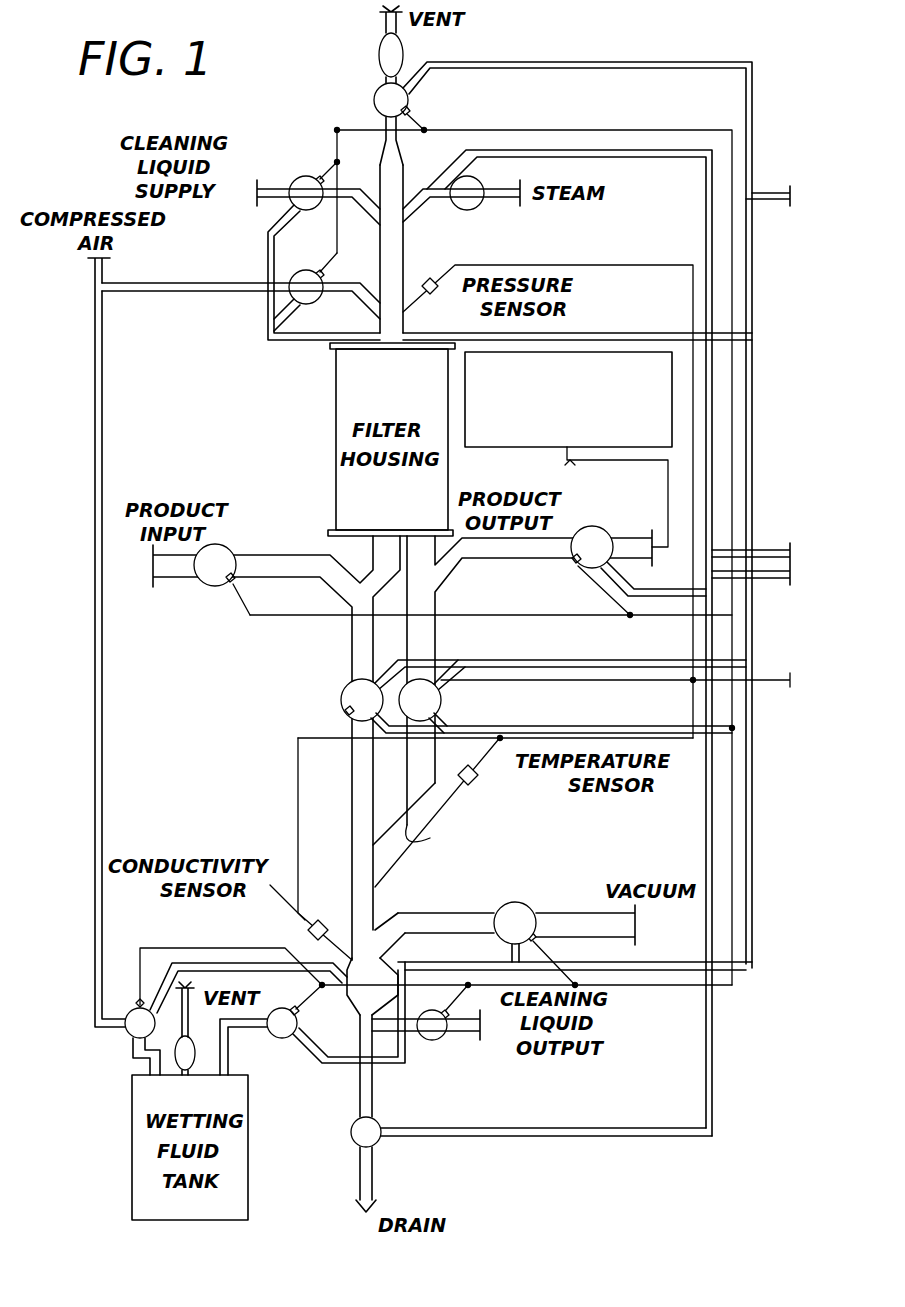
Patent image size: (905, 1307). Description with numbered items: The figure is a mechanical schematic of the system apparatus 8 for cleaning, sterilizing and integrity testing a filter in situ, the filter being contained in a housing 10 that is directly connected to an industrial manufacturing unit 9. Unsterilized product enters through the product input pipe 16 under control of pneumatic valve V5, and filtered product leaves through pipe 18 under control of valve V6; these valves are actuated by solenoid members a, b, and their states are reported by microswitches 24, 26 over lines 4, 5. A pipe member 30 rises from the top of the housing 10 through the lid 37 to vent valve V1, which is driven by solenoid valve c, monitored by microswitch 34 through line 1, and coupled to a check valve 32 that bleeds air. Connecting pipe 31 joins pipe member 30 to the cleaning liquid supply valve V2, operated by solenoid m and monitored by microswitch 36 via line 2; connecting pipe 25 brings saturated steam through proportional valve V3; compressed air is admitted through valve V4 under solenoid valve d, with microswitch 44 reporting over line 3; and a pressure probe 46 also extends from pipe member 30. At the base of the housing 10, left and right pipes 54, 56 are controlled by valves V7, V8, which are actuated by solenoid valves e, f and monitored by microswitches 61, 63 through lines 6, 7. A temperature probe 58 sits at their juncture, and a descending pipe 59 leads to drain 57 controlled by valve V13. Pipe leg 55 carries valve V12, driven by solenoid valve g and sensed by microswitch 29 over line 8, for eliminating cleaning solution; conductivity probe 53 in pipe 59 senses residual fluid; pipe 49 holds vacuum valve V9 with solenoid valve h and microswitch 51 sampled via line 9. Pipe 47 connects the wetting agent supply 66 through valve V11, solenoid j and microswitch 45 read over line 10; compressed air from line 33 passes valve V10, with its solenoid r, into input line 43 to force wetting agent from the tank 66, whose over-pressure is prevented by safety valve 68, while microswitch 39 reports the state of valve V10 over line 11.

The line 1 is at (412, 120).
The line 2 is at (330, 170).
The line 3 is at (332, 268).
The line 4 is at (240, 610).
The line 5 is at (628, 617).
The line 6 is at (376, 722).
The line 7 is at (450, 722).
The system apparatus 8 is at (718, 56).
The industrial manufacturing unit 9 is at (502, 447).
The filter housing 10 is at (336, 368).
The line 11 is at (142, 950).
The pipe 16 is at (298, 550).
The pipe 18 is at (508, 560).
The microswitch 24 is at (226, 590).
The connecting pipe 25 is at (410, 182).
The microswitch 26 is at (580, 560).
The microswitch 29 is at (448, 1038).
The third pipe member 30 is at (392, 338).
The connecting pipe 31 is at (345, 210).
The check valve 32 is at (382, 50).
The line 33 is at (102, 664).
The microswitch 34 is at (412, 110).
The microswitch 36 is at (335, 140).
The lid 37 is at (330, 345).
The microswitch 39 is at (120, 1012).
The input line 43 is at (135, 1060).
The microswitch 44 is at (326, 292).
The microswitch 45 is at (256, 963).
The pressure sensor or probe 46 is at (434, 278).
The pipe 47 is at (340, 1065).
The pipe 49 is at (478, 912).
The microswitch 51 is at (575, 935).
The conductivity probe 53 is at (316, 918).
The left pipe 54 is at (352, 826).
The pipe leg 55 is at (372, 1075).
The right pipe 56 is at (430, 838).
The drain 57 is at (378, 1195).
The temperature probe 58 is at (480, 782).
The descending pipe 59 is at (388, 890).
The microswitch 61 is at (345, 715).
The microswitch 63 is at (460, 685).
The wetting agent supply 66 is at (132, 1190).
The safety valve 68 is at (196, 1055).
The pneumatically operated valve V1 is at (410, 100).
The pneumatic valve V2 is at (300, 176).
The proportional steam valve V3 is at (478, 210).
The pneumatic valve V4 is at (271, 275).
The pneumatically actuated valve V5 is at (225, 545).
The pneumatically actuated valve V6 is at (600, 528).
The pneumatic valve V7 is at (350, 685).
The pneumatic valve V8 is at (441, 698).
The pneumatic valve V9 is at (528, 905).
The pneumatic valve V10 is at (128, 1035).
The pneumatic valve V11 is at (288, 1040).
The valve V12 is at (438, 1042).
The valve V13 is at (378, 1142).
The solenoid member a is at (258, 616).
The solenoid member b is at (640, 588).
The solenoid valve c is at (440, 70).
The solenoid valve d is at (272, 318).
The solenoid valve e is at (392, 670).
The solenoid valve f is at (455, 665).
The solenoid valve g is at (402, 912).
The solenoid valve h is at (510, 956).
The solenoid j is at (310, 1072).
The solenoid m is at (270, 218).
The pipe r is at (196, 963).